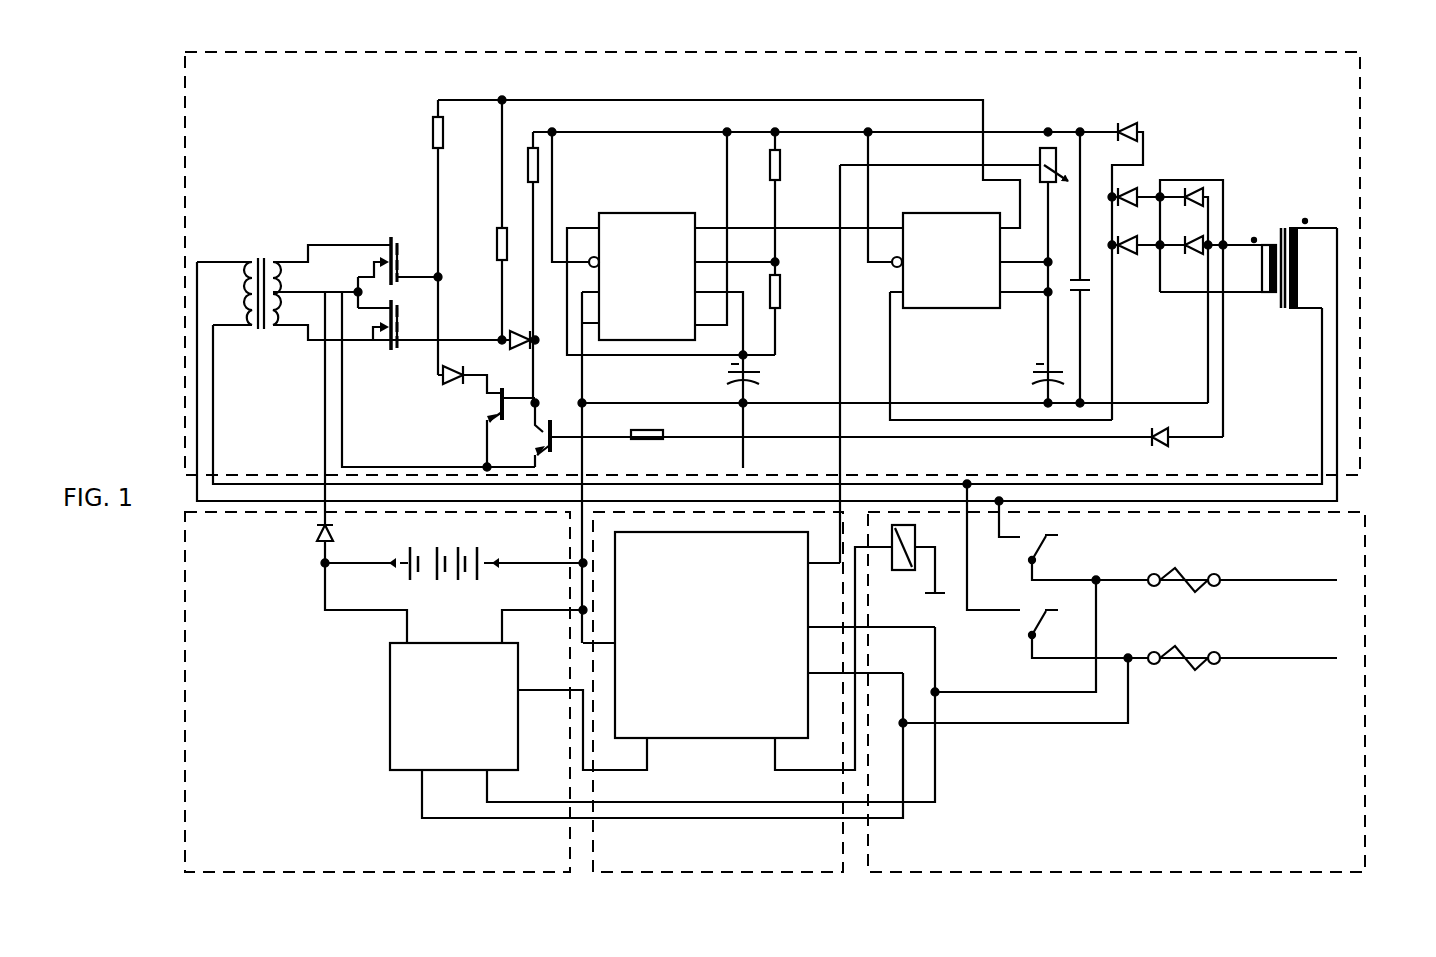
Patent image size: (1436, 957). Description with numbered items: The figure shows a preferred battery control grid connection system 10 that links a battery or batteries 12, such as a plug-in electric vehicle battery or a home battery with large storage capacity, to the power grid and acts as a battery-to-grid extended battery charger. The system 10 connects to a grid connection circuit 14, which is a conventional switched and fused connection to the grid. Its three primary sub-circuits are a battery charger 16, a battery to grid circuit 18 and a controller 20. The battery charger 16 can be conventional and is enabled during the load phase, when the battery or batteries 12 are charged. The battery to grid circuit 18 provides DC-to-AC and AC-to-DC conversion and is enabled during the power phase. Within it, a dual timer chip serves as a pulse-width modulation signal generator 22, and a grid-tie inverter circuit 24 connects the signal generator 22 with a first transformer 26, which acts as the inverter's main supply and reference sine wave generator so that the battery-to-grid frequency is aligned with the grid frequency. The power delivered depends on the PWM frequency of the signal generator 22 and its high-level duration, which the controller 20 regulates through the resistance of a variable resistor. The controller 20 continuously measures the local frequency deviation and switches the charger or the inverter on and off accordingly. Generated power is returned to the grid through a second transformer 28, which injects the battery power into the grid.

The battery control grid connection system 10 is at (150, 734).
The battery or batteries 12 is at (426, 546).
The grid connection circuit 14 is at (1366, 700).
The battery charger 16 is at (465, 873).
The battery to grid circuit 18 is at (1060, 52).
The controller 20 is at (757, 873).
The pulse-width modulation signal generator 22 is at (656, 212).
The grid-tie inverter circuit 24 is at (1190, 140).
The transformer TR1 26 is at (1296, 190).
The transformer TR2 28 is at (298, 194).